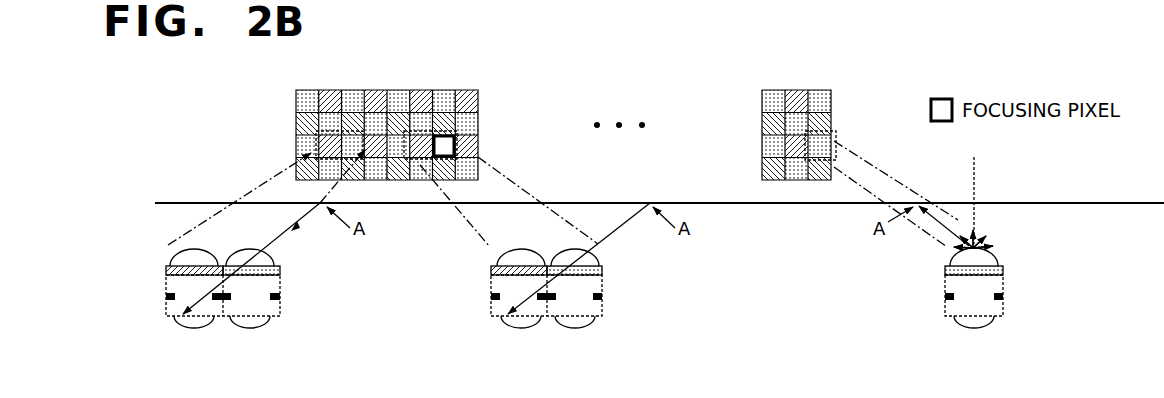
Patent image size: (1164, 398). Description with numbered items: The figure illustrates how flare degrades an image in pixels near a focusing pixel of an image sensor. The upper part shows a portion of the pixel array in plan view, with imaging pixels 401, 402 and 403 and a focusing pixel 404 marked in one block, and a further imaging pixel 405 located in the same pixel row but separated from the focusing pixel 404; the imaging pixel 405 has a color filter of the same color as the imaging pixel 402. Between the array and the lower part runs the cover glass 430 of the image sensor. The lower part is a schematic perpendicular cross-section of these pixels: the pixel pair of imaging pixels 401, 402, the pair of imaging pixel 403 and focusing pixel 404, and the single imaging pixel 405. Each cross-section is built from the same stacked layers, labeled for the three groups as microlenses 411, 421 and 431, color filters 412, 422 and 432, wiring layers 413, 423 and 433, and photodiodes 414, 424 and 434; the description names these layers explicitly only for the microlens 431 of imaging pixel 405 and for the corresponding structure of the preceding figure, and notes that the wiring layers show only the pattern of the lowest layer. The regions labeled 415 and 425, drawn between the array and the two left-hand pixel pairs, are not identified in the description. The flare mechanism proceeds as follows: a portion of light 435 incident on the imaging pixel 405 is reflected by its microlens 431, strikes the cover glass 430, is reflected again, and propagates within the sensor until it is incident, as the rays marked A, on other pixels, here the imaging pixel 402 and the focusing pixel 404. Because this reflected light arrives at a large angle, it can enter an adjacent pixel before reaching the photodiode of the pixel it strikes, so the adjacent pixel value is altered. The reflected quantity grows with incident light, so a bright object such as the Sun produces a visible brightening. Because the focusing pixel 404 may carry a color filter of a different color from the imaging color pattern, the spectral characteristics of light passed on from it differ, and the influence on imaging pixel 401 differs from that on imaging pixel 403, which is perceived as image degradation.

The imaging pixel 401 is at (327, 140).
The imaging pixel 402 is at (362, 135).
The imaging pixel 403 is at (417, 138).
The focusing pixel 404 is at (446, 138).
The imaging pixel 405 is at (808, 150).
The microlens 411 is at (282, 245).
The color filter 412 is at (282, 265).
The wiring layer 413 is at (282, 288).
The photoelectric conversion portion 414 is at (282, 312).
The light flux region 415 is at (282, 240).
The microlens 421 is at (605, 245).
The color filter 422 is at (605, 265).
The wiring layer 423 is at (605, 288).
The photoelectric conversion portion 424 is at (605, 312).
The light flux region 425 is at (613, 238).
The cover glass 430 is at (1120, 202).
The microlens 431 is at (1005, 245).
The color filter 432 is at (1005, 265).
The wiring layer 433 is at (1005, 288).
The photoelectric conversion portion 434 is at (1005, 312).
The light 435 is at (977, 182).